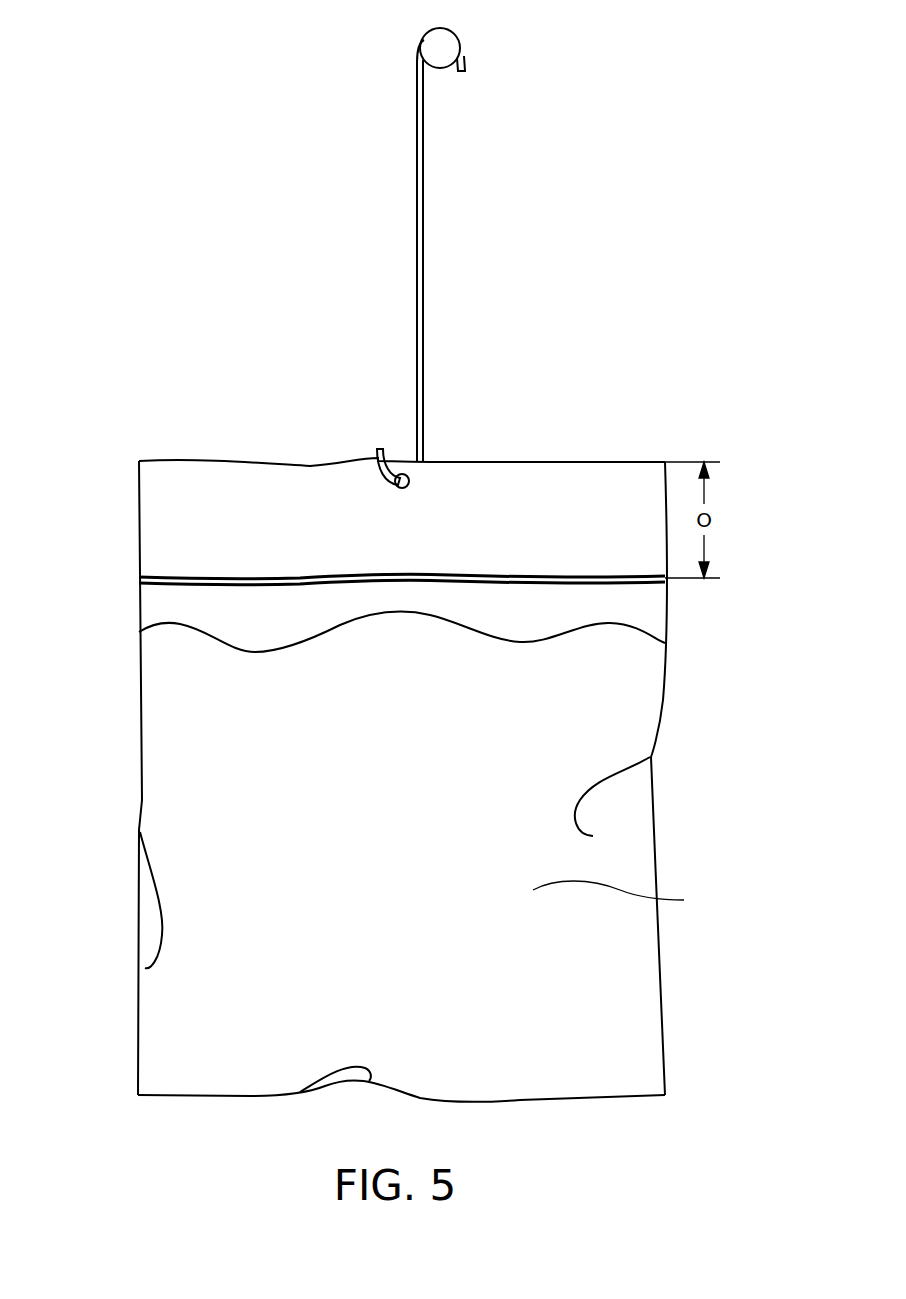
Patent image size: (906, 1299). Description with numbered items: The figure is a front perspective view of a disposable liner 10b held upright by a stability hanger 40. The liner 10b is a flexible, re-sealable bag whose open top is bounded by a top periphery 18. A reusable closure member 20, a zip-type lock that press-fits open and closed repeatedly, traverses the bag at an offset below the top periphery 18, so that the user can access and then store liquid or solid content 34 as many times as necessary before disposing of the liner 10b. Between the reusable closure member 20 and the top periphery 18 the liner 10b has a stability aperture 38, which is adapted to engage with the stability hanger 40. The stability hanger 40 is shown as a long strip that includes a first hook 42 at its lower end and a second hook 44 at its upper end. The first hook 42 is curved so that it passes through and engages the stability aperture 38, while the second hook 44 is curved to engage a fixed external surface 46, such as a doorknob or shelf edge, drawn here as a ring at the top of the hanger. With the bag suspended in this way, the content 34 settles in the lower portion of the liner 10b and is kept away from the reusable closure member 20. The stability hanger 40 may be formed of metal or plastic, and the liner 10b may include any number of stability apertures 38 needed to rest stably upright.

The disposable liner 10b is at (675, 655).
The top periphery 18 is at (232, 459).
The reusable closure member 20 is at (139, 577).
The content 34 is at (623, 896).
The stability aperture 38 is at (409, 479).
The stability hanger 40 is at (424, 220).
The first hook 42 is at (377, 452).
The second hook 44 is at (469, 69).
The fixed external surface 46 is at (432, 45).